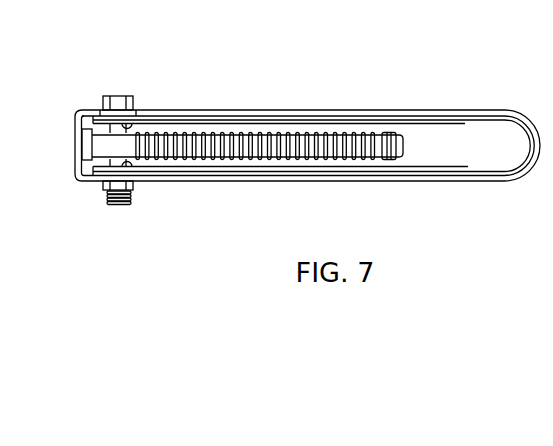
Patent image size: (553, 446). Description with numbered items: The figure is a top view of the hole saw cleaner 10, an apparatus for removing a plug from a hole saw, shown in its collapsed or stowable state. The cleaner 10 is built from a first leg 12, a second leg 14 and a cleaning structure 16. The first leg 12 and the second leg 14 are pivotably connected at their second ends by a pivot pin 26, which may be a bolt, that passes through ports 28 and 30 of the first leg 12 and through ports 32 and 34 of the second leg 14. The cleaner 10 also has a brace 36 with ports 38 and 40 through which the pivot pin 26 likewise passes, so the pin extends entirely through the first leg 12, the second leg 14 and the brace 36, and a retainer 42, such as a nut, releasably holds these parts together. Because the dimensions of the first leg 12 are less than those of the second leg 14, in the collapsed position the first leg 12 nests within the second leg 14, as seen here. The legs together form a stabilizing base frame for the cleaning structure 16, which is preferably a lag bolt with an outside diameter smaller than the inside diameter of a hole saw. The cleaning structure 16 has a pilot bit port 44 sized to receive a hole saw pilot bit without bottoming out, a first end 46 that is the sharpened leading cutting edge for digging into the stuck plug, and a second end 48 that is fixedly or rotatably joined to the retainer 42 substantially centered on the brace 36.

The hole saw cleaner 10 is at (222, 24).
The first leg 12 is at (472, 166).
The second leg 14 is at (390, 182).
The cleaning structure 16 is at (244, 118).
The pivot pin 26 is at (122, 96).
The port 28 is at (128, 123).
The port 30 is at (128, 166).
The port 32 is at (100, 114).
The port 34 is at (100, 175).
The brace 36 is at (75, 139).
The port 38 is at (102, 111).
The port 40 is at (103, 181).
The retainer 42 is at (134, 190).
The pilot bit port 44 is at (404, 145).
The first end 46 is at (370, 134).
The second end 48 is at (100, 133).